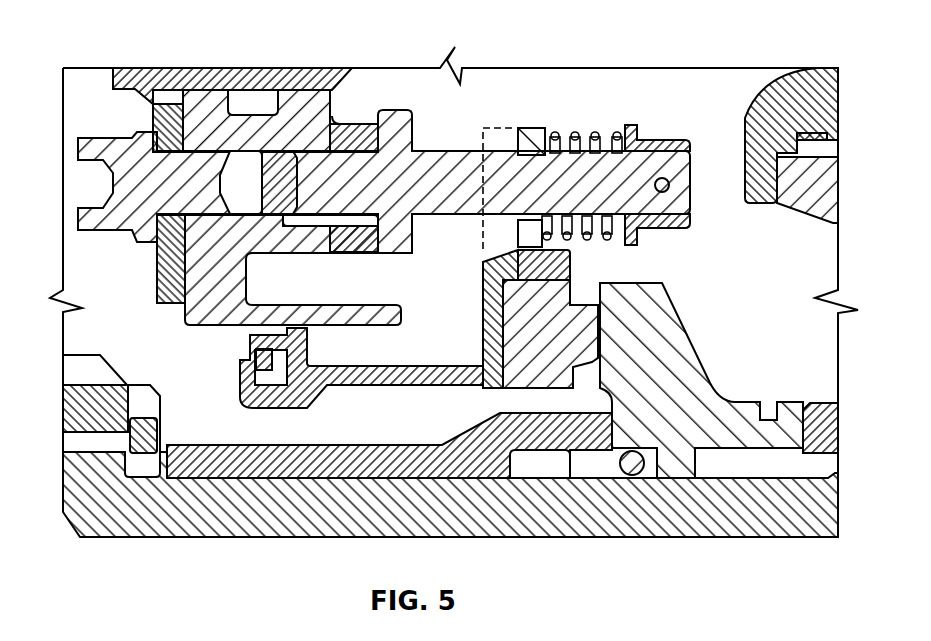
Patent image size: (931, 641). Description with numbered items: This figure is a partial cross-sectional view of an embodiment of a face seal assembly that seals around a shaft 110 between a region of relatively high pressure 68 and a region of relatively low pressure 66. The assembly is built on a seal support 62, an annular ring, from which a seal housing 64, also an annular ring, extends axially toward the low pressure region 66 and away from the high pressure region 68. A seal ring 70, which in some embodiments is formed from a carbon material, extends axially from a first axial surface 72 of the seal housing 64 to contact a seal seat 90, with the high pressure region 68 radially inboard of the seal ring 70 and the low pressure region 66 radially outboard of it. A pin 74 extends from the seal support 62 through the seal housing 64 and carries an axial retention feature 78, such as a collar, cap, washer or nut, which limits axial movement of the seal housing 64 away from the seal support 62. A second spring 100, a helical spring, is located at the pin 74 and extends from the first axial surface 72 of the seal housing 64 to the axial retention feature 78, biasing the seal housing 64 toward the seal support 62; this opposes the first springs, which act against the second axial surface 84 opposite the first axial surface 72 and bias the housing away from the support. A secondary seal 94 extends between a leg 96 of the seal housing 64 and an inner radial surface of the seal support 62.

The seal support 62 is at (193, 272).
The seal housing 64 is at (498, 143).
The region of relatively low pressure 66 is at (790, 308).
The region of relatively high pressure 68 is at (120, 278).
The seal ring 70 is at (575, 306).
The first axial surface 72 is at (532, 153).
The pin 74 is at (423, 168).
The axial retention feature 78 is at (662, 138).
The second axial surface 84 is at (492, 128).
The seal seat 90 is at (670, 347).
The secondary seal 94 is at (263, 370).
The leg 96 is at (348, 388).
The second spring 100 is at (598, 132).
The shaft 110 is at (283, 522).